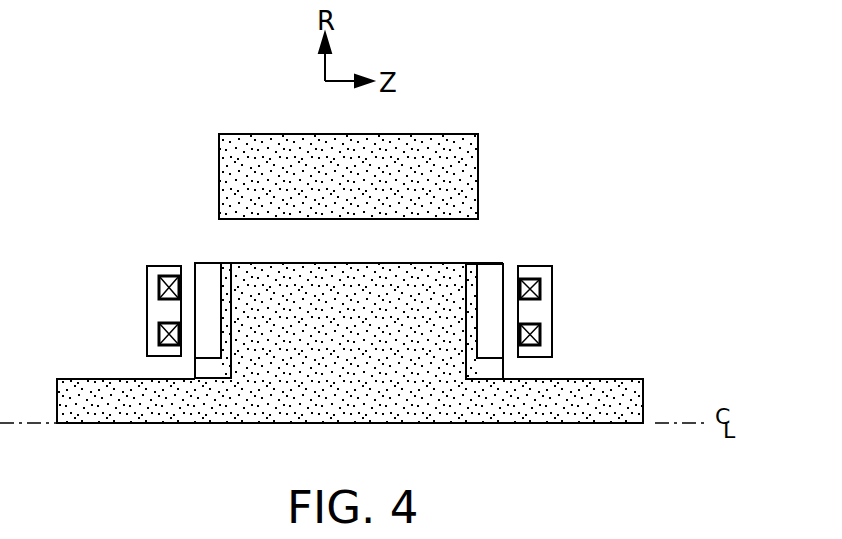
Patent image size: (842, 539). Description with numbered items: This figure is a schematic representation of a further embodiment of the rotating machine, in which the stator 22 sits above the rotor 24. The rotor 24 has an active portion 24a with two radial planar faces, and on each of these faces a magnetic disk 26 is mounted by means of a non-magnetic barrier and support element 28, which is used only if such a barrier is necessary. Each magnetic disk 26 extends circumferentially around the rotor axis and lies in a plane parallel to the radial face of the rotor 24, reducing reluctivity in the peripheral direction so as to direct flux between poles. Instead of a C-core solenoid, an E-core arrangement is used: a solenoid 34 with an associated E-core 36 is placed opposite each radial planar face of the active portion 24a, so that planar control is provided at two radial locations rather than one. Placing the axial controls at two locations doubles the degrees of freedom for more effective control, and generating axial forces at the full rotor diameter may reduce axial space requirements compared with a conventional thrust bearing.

The stator 22 is at (437, 163).
The rotor 24 is at (523, 403).
The active portion of rotor 24a is at (356, 305).
The magnetic disk 26 is at (210, 273).
The non-magnetic barrier and support element 28 is at (228, 310).
The solenoid 34 is at (158, 283).
The E-core 36 is at (153, 310).